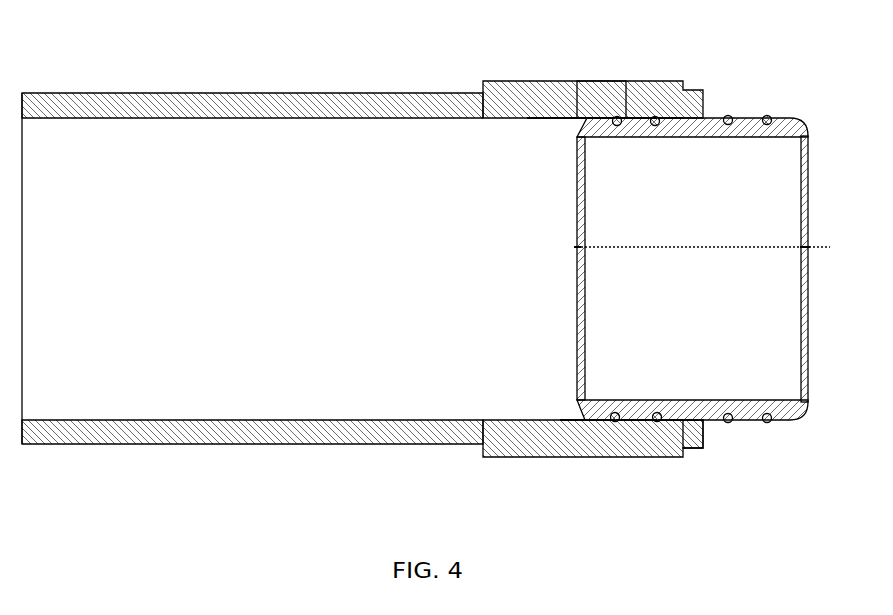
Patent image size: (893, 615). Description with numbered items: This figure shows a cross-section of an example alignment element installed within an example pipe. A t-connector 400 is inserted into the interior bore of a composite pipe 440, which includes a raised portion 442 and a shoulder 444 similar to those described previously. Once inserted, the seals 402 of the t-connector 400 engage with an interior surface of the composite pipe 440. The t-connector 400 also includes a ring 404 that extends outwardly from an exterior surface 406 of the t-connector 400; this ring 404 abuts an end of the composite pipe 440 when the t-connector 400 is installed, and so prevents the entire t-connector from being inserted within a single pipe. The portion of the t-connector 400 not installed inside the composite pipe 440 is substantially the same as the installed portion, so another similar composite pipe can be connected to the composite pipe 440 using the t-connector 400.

The t-connector 400 is at (718, 96).
The seals 402 is at (659, 424).
The ring 404 is at (705, 446).
The exterior surface 406 is at (745, 111).
The composite pipe 440 is at (90, 80).
The raised portion 442 is at (600, 71).
The shoulder 444 is at (482, 80).